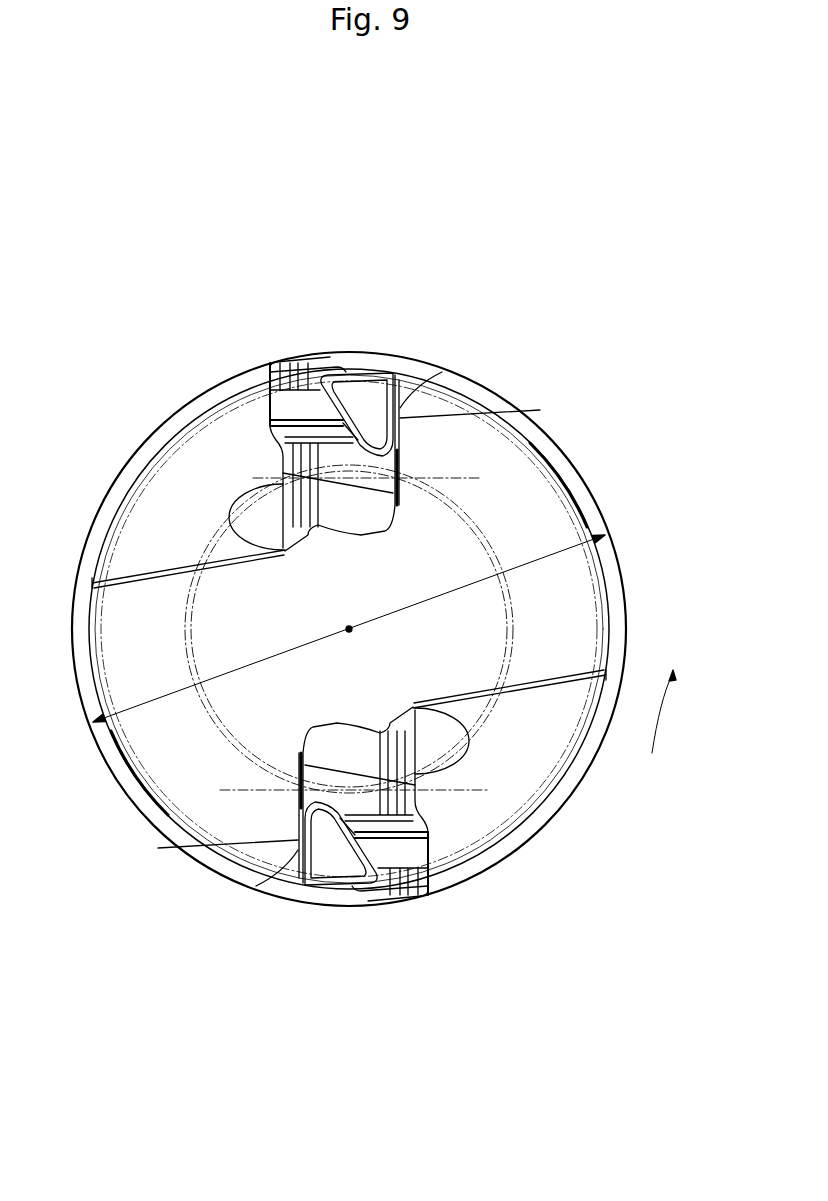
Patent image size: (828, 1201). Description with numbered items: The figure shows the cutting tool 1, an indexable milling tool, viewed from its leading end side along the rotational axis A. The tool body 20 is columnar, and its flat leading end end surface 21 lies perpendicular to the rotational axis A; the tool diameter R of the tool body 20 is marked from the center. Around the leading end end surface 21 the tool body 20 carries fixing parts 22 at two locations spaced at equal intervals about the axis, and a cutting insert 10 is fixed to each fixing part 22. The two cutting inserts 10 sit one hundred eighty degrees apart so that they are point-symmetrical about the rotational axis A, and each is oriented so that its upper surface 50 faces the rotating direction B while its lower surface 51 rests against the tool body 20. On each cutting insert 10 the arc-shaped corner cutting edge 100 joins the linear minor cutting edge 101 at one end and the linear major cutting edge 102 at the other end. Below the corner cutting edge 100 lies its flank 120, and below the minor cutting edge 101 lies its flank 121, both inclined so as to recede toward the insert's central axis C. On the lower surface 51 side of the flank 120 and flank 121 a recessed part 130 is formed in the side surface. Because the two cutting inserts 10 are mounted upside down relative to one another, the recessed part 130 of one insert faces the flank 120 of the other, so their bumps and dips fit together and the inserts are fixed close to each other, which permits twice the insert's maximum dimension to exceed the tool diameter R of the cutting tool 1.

The cutting tool 1 is at (422, 266).
The cutting insert 10 is at (327, 350).
The tool body 20 is at (487, 360).
The leading end end surface 21 is at (573, 593).
The fixing part 22 is at (540, 410).
The upper surface 50 is at (268, 430).
The lower surface 51 is at (443, 372).
The corner cutting edge 100 is at (265, 362).
The minor cutting edge 101 is at (270, 388).
The major cutting edge 102 is at (297, 360).
The flank 120 is at (277, 360).
The flank 121 is at (290, 408).
The recessed part 130 is at (373, 397).